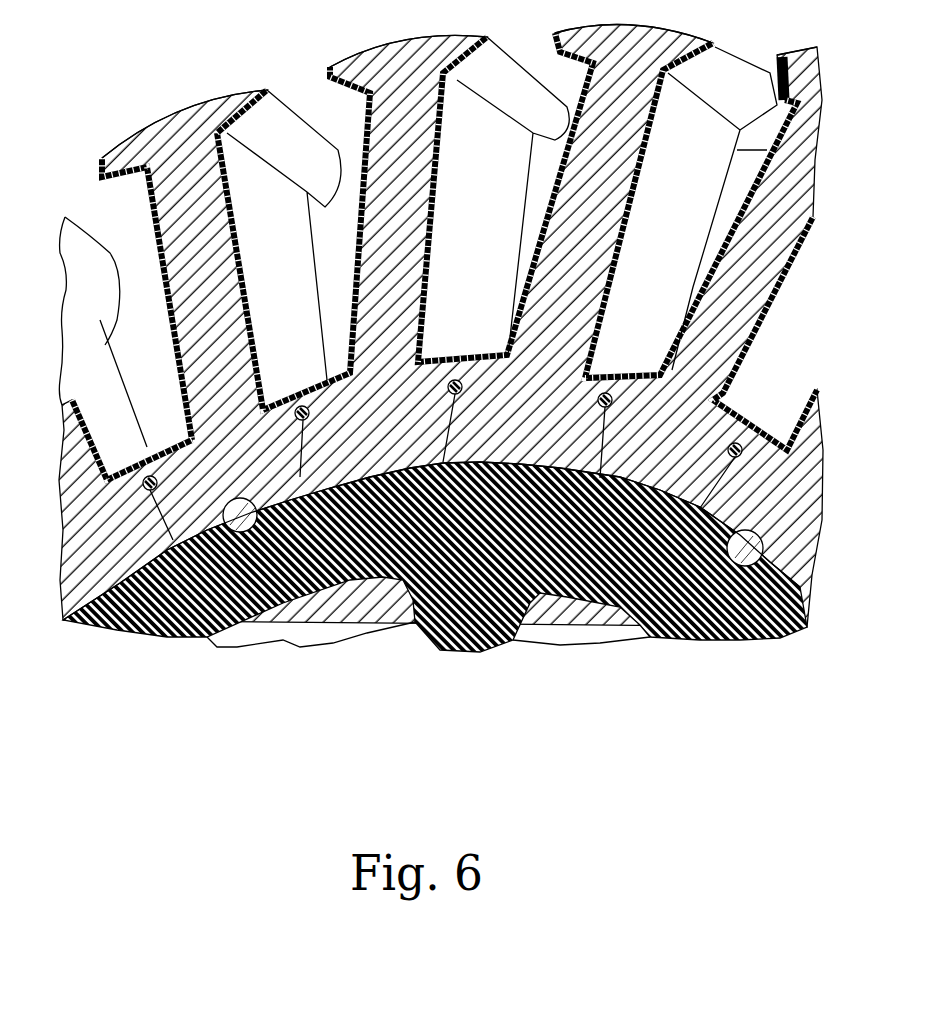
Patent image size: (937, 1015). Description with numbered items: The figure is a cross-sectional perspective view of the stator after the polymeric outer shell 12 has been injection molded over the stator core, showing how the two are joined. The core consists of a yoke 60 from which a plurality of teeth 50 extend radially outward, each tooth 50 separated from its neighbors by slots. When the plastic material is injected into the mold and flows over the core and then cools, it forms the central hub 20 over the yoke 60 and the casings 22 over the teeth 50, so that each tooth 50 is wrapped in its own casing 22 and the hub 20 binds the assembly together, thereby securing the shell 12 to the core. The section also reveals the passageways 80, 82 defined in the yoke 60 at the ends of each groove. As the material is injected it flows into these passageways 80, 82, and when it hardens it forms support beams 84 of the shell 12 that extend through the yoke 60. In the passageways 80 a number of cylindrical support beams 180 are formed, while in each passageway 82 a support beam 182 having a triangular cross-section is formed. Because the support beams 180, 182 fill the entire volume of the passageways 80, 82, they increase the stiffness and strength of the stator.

The outer shell 12 is at (280, 104).
The central hub 20 is at (153, 443).
The casings 22 is at (290, 262).
The teeth 50 is at (182, 112).
The yoke 60 is at (63, 620).
The passageways 80 is at (176, 472).
The passageways 82 is at (178, 529).
The support beams 84 is at (149, 491).
The cylindrical support beams 180 is at (303, 406).
The support beam 182 is at (443, 462).